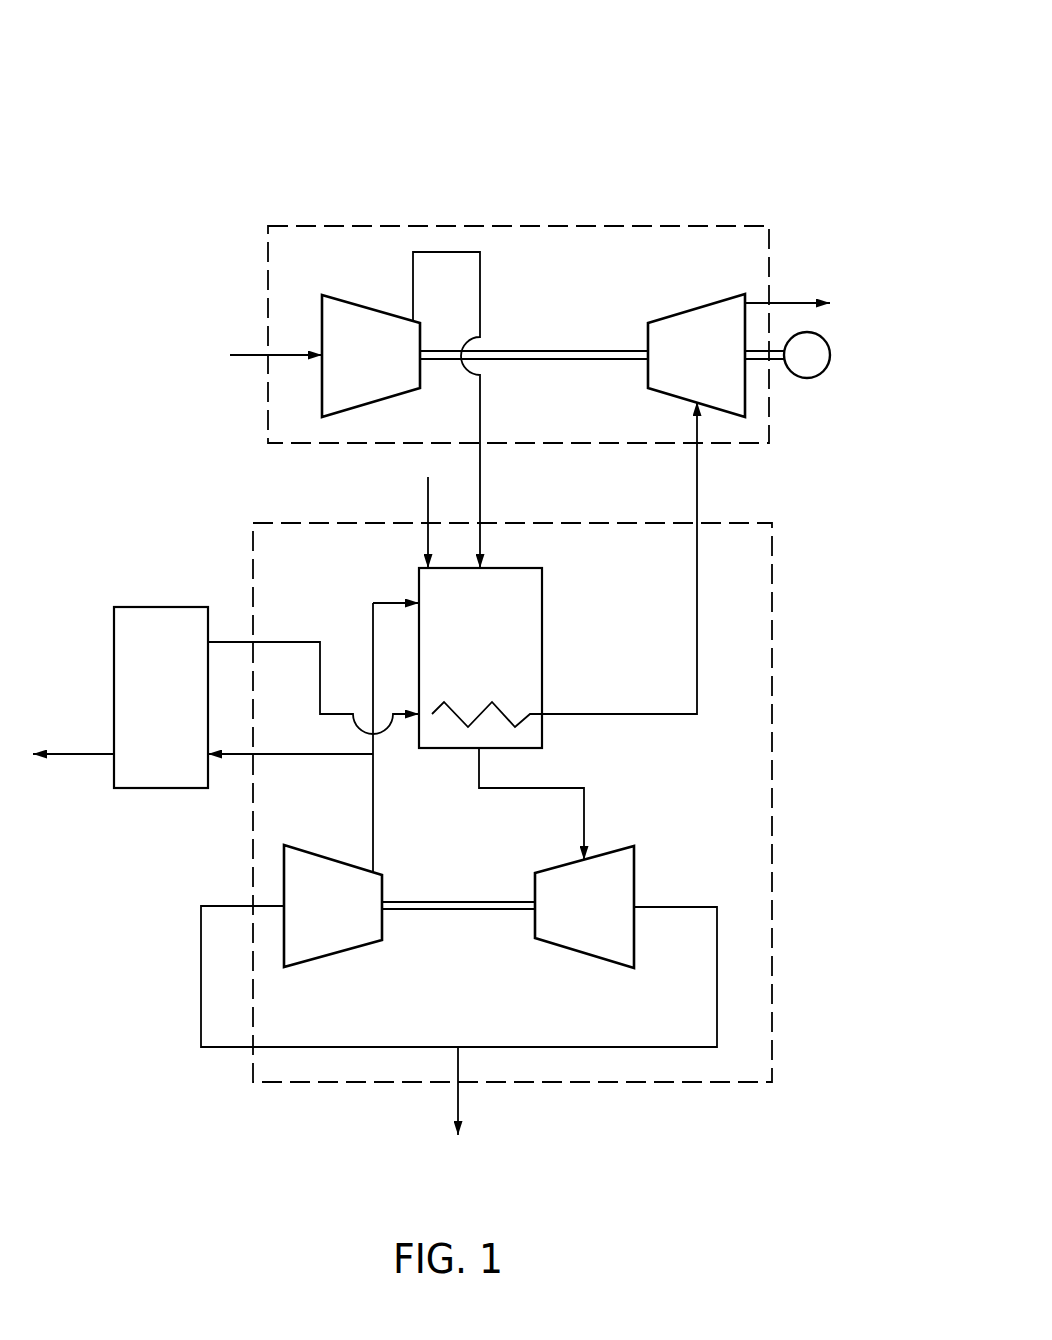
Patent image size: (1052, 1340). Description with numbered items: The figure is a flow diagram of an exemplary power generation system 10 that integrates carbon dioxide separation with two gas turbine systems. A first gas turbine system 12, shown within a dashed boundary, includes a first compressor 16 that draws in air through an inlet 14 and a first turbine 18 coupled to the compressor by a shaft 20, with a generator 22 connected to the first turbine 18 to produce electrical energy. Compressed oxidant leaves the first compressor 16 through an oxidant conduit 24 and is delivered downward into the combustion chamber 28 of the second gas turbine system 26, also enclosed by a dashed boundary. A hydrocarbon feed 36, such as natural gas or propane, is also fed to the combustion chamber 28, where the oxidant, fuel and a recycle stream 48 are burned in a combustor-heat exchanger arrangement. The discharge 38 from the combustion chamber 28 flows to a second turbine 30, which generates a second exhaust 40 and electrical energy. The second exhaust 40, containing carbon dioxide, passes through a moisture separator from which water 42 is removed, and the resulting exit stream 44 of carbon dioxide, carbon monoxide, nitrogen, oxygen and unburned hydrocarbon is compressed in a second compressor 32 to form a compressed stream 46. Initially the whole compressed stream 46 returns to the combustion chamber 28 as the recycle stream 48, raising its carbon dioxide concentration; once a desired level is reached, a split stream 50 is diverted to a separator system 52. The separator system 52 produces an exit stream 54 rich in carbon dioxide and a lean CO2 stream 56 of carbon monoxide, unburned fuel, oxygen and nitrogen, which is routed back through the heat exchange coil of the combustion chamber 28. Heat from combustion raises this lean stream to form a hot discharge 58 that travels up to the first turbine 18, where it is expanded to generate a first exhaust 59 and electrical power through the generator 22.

The power generation system 10 is at (222, 50).
The first gas turbine system 12 is at (597, 224).
The air inlet 14 is at (246, 355).
The first compressor 16 is at (372, 309).
The first turbine 18 is at (700, 307).
The shaft 20 is at (532, 350).
The generator 22 is at (832, 355).
The oxidant conduit 24 is at (446, 252).
The second gas turbine system 26 is at (772, 603).
The combustion chamber 28 is at (542, 657).
The second turbine 30 is at (634, 870).
The second compressor 32 is at (370, 943).
The hydrocarbon feed 36 is at (428, 503).
The discharge 38 is at (584, 805).
The second exhaust 40 is at (597, 1047).
The water 42 is at (458, 1103).
The exit stream 44 is at (318, 1047).
The compressed stream 46 is at (373, 836).
The recycle stream 48 is at (373, 625).
The split stream 50 is at (288, 754).
The separator system 52 is at (160, 607).
The exit stream 54 is at (73, 754).
The lean CO2 stream 56 is at (270, 642).
The hot discharge 58 is at (697, 622).
The first exhaust 59 is at (790, 303).